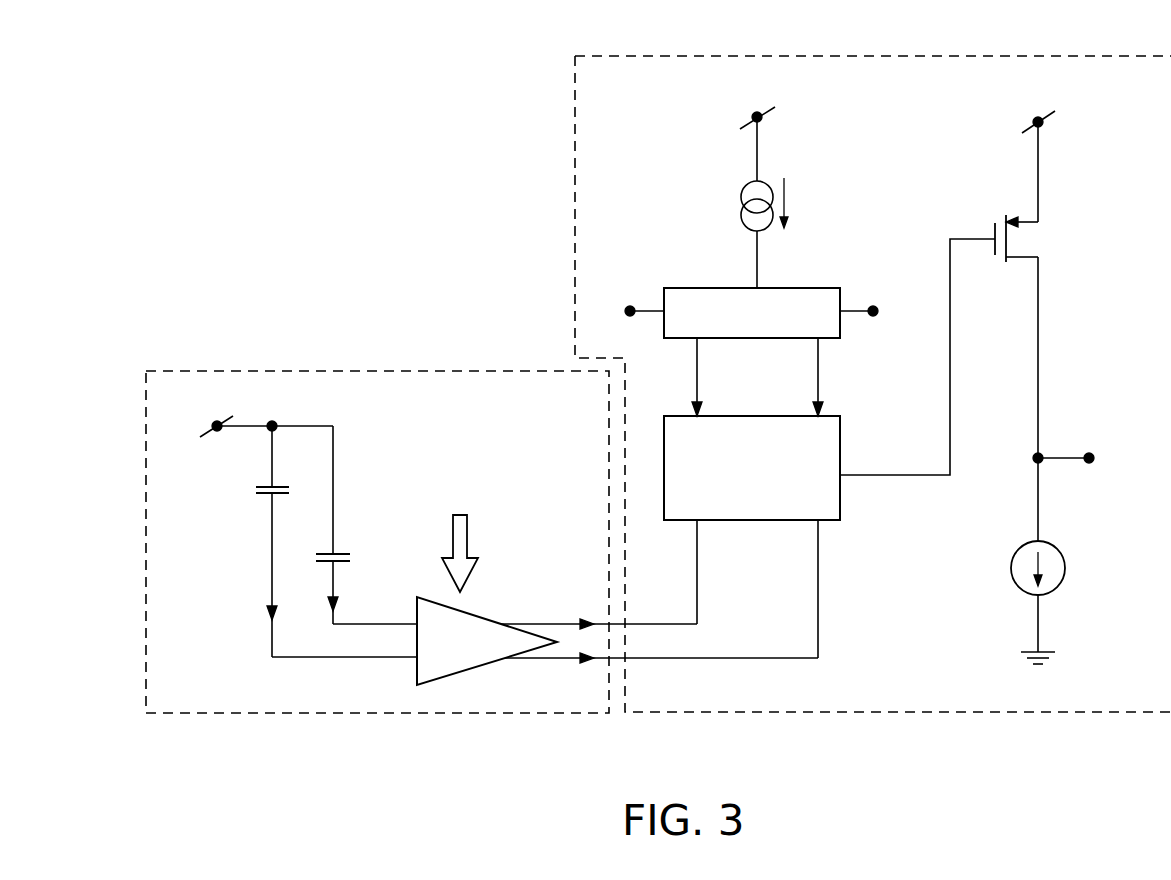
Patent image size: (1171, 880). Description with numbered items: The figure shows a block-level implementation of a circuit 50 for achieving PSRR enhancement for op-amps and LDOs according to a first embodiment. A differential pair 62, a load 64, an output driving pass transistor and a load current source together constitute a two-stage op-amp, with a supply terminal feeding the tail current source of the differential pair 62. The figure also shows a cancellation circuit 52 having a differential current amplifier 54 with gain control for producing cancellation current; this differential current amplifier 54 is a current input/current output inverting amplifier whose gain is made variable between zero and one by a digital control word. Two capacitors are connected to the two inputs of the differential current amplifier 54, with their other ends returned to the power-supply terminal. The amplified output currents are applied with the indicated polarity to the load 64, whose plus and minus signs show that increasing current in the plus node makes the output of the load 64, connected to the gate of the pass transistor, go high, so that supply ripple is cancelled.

The circuit 50 is at (340, 182).
The cancellation circuit 52 is at (340, 371).
The differential current amplifier 54 is at (447, 677).
The differential pair 62 is at (813, 288).
The load 64 is at (842, 431).